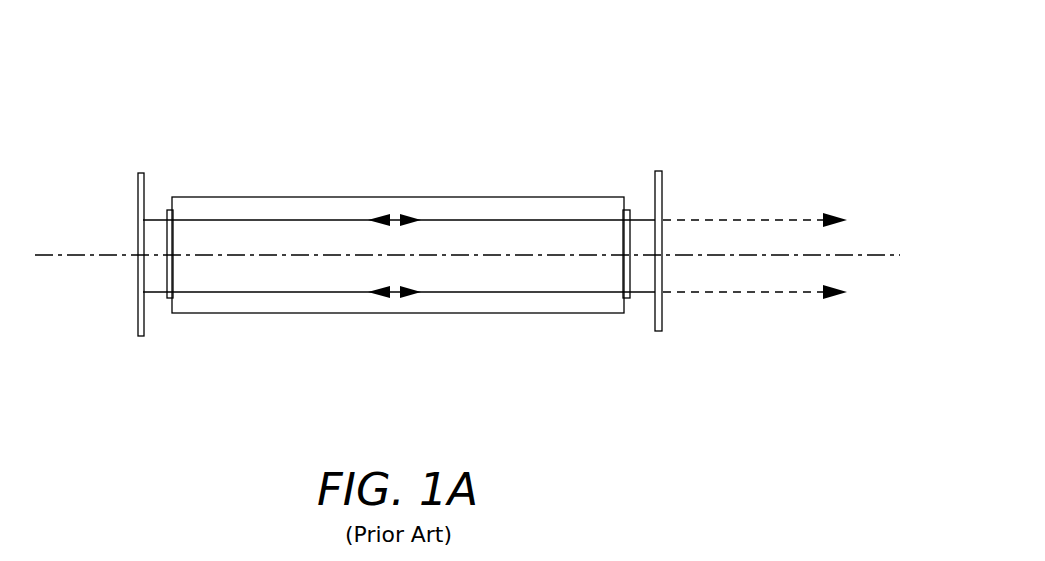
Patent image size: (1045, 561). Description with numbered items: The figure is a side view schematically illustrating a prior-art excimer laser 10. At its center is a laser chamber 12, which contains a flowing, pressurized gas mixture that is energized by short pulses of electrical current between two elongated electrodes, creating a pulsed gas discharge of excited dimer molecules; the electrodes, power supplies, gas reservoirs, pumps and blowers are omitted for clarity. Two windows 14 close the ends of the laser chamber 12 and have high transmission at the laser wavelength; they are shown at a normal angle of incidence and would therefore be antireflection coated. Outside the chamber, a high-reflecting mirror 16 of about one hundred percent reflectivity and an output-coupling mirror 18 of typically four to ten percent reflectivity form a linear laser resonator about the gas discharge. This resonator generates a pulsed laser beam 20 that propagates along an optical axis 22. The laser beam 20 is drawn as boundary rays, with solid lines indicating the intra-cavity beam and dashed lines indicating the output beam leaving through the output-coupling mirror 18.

The excimer laser 10 is at (770, 93).
The laser chamber 12 is at (320, 198).
The windows 14 is at (168, 298).
The high-reflecting mirror 16 is at (147, 180).
The output-coupling mirror 18 is at (653, 322).
The laser beam 20 is at (491, 218).
The optical axis 22 is at (61, 253).